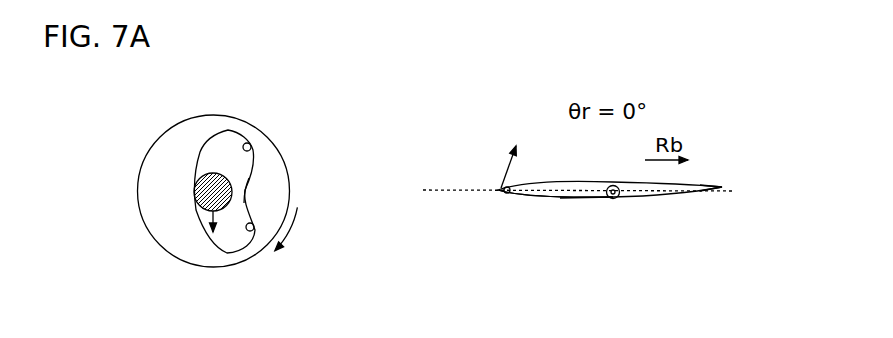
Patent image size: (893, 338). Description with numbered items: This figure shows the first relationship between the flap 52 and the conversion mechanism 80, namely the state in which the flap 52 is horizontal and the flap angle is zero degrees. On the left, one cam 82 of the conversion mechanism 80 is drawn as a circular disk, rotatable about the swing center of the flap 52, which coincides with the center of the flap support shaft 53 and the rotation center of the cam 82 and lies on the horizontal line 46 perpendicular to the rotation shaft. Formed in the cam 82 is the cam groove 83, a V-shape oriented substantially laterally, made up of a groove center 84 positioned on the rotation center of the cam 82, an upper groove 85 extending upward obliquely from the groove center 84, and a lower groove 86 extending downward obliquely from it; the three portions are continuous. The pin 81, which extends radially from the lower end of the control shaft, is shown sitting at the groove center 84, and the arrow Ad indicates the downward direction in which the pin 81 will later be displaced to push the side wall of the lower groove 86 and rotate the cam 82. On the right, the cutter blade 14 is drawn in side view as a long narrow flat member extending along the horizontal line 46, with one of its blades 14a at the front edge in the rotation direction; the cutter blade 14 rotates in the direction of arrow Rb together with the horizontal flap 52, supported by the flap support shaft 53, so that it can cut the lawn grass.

The conversion mechanism 80 is at (133, 132).
The cam 82 is at (188, 118).
The cam groove 83 is at (350, 105).
The groove center 84 is at (246, 193).
The upper groove 85 is at (250, 143).
The lower groove 86 is at (253, 216).
The pin 81 is at (194, 195).
The downward displacement direction Ad is at (205, 215).
The horizontal line 46 is at (228, 130).
The cutter blade 14 is at (700, 194).
The blade 14a is at (722, 186).
The flap 52 is at (533, 199).
The flap support shaft 53 is at (603, 200).